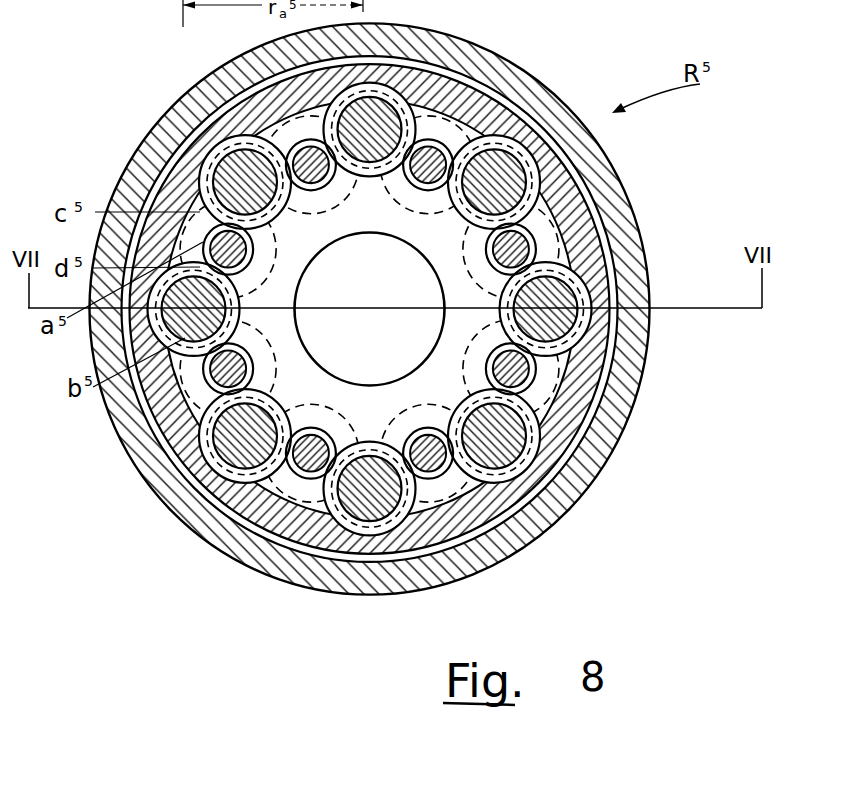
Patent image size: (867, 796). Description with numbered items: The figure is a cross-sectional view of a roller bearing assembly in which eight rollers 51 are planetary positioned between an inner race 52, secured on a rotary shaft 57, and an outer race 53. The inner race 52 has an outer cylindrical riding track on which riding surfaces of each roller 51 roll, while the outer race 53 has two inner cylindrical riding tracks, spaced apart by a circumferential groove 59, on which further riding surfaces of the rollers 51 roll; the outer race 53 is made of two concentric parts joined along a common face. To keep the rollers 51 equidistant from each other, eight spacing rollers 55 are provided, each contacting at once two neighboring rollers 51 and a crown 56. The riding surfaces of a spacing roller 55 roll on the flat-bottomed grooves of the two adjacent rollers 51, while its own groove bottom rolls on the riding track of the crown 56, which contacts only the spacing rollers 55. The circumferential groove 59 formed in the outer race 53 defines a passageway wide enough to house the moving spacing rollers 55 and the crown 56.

The roller 51 is at (488, 132).
The inner race 52 is at (395, 303).
The outer race 53 is at (630, 258).
The spacing roller 55 is at (535, 183).
The crown 56 is at (575, 212).
The rotary shaft 57 is at (425, 329).
The circumferential groove 59 is at (568, 160).